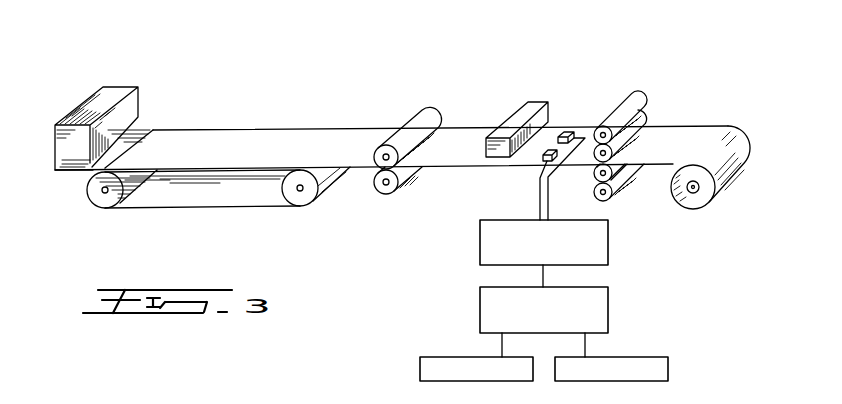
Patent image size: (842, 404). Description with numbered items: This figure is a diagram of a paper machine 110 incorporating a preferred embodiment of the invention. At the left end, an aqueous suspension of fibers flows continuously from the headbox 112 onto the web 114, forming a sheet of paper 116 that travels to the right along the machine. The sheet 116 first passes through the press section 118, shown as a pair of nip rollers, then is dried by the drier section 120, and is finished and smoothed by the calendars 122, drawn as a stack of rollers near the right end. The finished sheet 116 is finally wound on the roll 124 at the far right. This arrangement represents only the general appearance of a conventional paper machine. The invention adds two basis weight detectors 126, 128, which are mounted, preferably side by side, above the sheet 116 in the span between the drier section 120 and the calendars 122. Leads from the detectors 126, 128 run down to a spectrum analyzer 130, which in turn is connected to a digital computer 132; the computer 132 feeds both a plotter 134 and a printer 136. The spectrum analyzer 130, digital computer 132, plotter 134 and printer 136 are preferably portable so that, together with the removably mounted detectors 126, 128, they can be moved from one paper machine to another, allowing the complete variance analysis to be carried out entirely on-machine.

The paper machine 110 is at (285, 127).
The headbox 112 is at (114, 88).
The web 114 is at (226, 170).
The sheet of paper 116 is at (217, 140).
The press section 118 is at (387, 192).
The drier section 120 is at (533, 103).
The calendars 122 is at (635, 97).
The roll 124 is at (693, 199).
The basis weight detector 126 is at (567, 134).
The basis weight detector 128 is at (543, 163).
The spectrum analyzer 130 is at (480, 247).
The digital computer 132 is at (480, 313).
The plotter 134 is at (420, 371).
The printer 136 is at (668, 371).